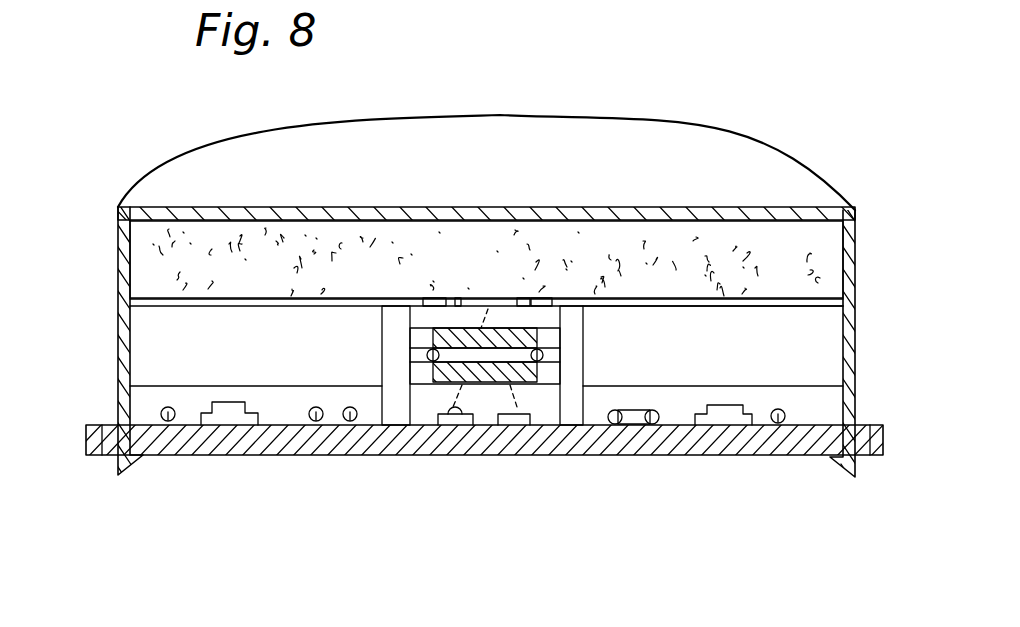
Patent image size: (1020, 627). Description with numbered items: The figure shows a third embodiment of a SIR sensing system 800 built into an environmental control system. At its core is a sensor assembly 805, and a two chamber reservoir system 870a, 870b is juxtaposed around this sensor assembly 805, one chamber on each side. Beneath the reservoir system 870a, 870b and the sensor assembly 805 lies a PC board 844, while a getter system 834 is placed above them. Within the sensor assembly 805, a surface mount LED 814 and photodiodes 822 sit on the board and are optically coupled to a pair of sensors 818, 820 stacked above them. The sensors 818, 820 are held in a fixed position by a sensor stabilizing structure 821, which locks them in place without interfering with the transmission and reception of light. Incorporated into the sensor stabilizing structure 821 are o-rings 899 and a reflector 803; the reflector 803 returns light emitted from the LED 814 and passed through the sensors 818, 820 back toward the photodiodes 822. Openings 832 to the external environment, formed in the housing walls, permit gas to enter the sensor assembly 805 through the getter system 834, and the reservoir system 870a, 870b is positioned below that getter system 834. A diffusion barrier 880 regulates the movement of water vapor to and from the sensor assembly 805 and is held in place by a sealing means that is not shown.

The SIR sensing system 800 is at (740, 126).
The reflector 803 is at (438, 297).
The sensor assembly 805 is at (503, 470).
The surface mount LED 814 is at (454, 425).
The sensor 818 is at (525, 338).
The sensor 820 is at (528, 342).
The sensor stabilizing structure 821 is at (418, 341).
The photodiode 822 is at (518, 425).
The openings 832 is at (118, 245).
The getter system 834 is at (163, 237).
The PC board 844 is at (778, 423).
The reservoir system chamber 870a is at (157, 335).
The reservoir system chamber 870b is at (815, 377).
The diffusion barrier 880 is at (800, 307).
The o-ring 899 is at (539, 361).